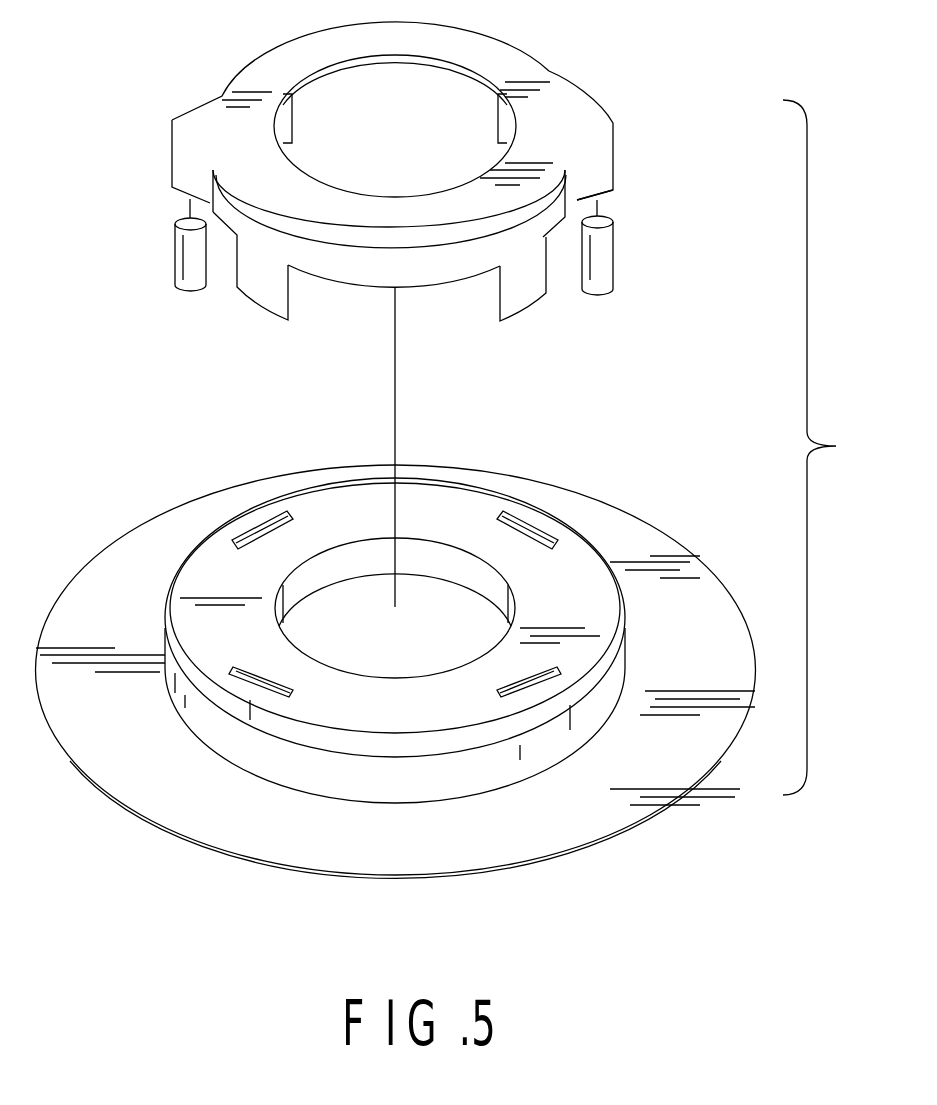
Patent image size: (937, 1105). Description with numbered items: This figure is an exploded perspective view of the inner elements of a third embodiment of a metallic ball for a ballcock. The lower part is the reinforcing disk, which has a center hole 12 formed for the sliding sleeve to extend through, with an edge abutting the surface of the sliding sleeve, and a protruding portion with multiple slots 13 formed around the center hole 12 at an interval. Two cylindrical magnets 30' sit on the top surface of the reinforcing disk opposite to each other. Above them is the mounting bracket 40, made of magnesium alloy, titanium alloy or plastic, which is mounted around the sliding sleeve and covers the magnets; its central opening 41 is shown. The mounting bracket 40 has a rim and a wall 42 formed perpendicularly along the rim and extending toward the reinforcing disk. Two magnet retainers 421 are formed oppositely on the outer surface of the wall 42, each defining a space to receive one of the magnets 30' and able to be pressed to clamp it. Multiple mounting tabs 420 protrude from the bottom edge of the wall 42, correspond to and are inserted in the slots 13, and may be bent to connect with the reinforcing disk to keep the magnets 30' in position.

The mounting bracket 40 is at (537, 97).
The central opening 41 is at (487, 88).
The wall 42 is at (580, 193).
The magnet retainer 421 is at (174, 153).
The mounting tab 420 is at (262, 283).
The magnet 30' is at (356, 247).
The center hole 12 is at (490, 583).
The slot 13 is at (533, 530).